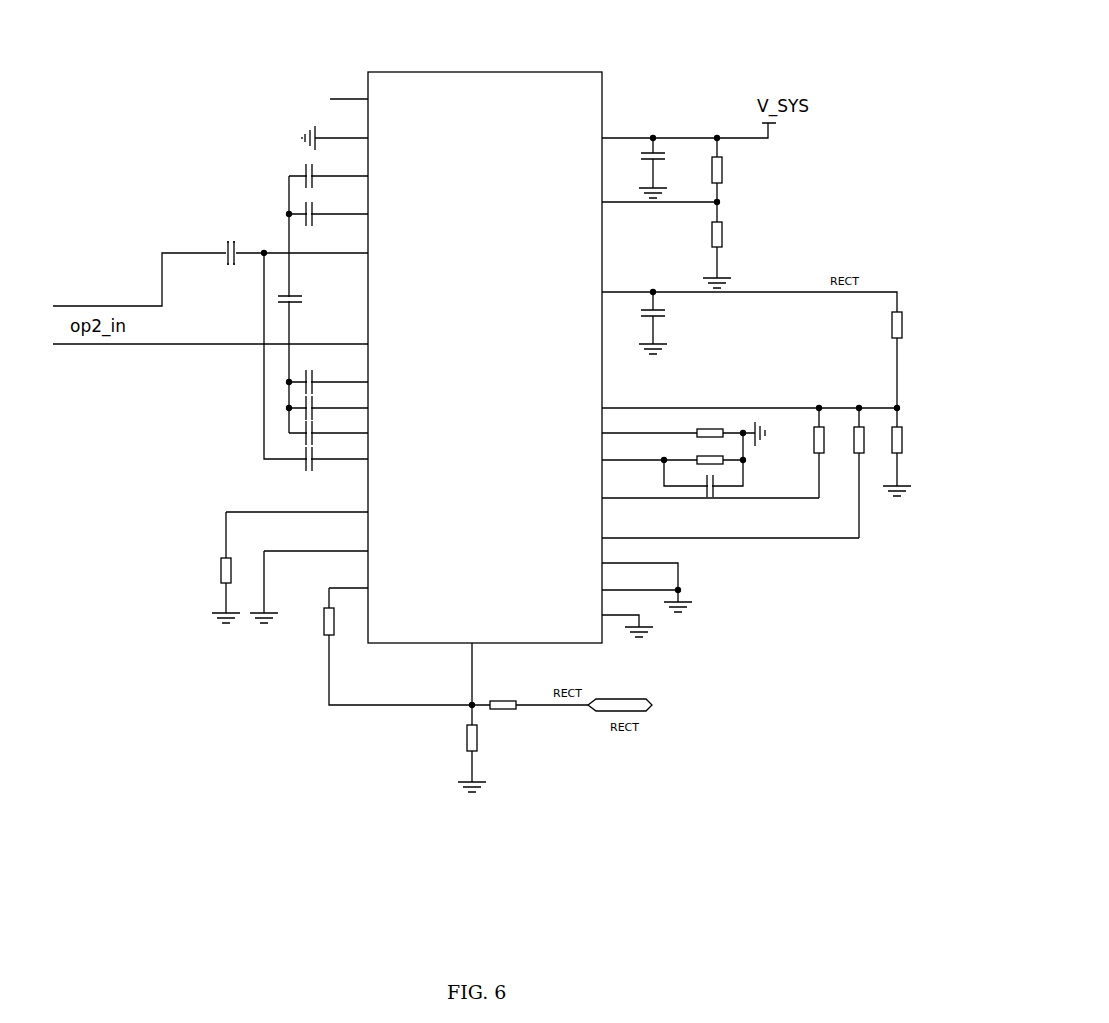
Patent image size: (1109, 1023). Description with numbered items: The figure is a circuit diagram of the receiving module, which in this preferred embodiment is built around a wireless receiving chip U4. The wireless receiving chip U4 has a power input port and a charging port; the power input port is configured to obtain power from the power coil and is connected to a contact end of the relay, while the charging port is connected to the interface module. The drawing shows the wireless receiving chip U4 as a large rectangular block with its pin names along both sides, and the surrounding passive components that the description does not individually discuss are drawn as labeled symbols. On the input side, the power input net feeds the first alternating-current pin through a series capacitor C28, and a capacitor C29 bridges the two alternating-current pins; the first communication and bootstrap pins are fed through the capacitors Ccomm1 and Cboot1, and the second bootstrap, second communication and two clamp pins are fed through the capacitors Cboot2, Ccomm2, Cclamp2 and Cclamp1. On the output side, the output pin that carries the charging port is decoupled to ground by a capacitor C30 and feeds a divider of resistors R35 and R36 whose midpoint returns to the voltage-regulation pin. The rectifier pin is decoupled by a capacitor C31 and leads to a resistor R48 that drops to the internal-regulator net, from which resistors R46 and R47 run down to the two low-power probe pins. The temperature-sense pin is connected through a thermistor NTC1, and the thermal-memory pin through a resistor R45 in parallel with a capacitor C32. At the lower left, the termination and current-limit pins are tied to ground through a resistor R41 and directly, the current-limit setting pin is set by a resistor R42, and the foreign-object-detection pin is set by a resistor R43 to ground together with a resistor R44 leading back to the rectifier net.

The wireless receiving chip U4 is at (479, 343).
The capacitor C28 is at (233, 246).
The capacitor C29 is at (302, 299).
The capacitor C30 is at (664, 168).
The capacitor C31 is at (664, 323).
The capacitor C32 is at (700, 484).
The capacitor Ccomm1 is at (336, 174).
The capacitor Cboot1 is at (331, 212).
The capacitor Cboot2 is at (331, 380).
The capacitor Ccomm2 is at (336, 406).
The capacitor Cclamp2 is at (335, 432).
The capacitor Cclamp1 is at (335, 458).
The resistor R35 is at (730, 170).
The resistor R36 is at (726, 245).
The resistor R41 is at (239, 569).
The resistor R42 is at (343, 618).
The resistor R43 is at (457, 739).
The resistor R44 is at (503, 697).
The resistor R45 is at (706, 453).
The resistor R46 is at (832, 453).
The resistor R47 is at (872, 473).
The resistor R48 is at (885, 360).
The thermistor NTC1 is at (704, 426).